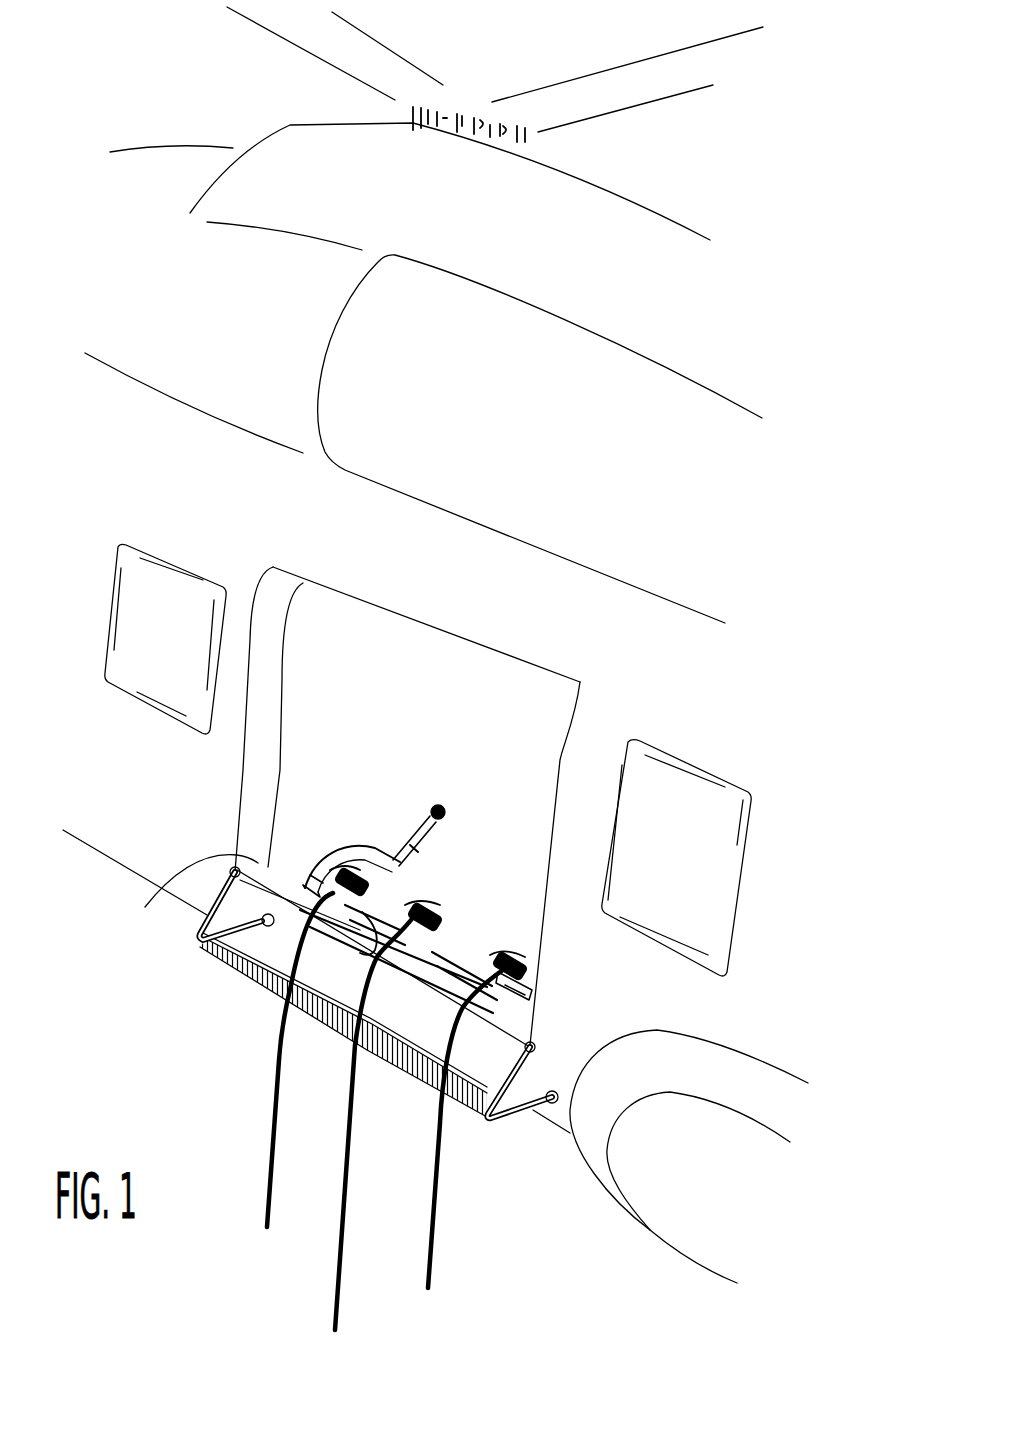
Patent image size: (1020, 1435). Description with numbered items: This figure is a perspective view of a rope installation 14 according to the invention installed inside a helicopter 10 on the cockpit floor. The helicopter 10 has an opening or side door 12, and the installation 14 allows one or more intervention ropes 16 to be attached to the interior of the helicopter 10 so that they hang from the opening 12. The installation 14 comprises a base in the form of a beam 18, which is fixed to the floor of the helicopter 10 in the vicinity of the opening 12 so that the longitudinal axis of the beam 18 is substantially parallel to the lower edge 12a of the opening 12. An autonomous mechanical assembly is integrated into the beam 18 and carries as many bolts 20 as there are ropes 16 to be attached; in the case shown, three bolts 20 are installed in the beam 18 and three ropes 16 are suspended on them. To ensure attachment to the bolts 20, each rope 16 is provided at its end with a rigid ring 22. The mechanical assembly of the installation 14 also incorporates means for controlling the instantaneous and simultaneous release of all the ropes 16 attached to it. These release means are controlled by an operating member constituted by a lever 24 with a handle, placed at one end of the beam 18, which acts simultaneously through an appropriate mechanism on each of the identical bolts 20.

The helicopter 10 is at (698, 222).
The opening or side door 12 is at (265, 765).
The lower edge of the opening 12a is at (191, 899).
The rope installation 14 is at (352, 812).
The intervention ropes 16 is at (432, 1238).
The beam 18 is at (420, 897).
The bolts 20 is at (415, 848).
The rigid ring 22 is at (380, 927).
The lever 24 is at (430, 803).